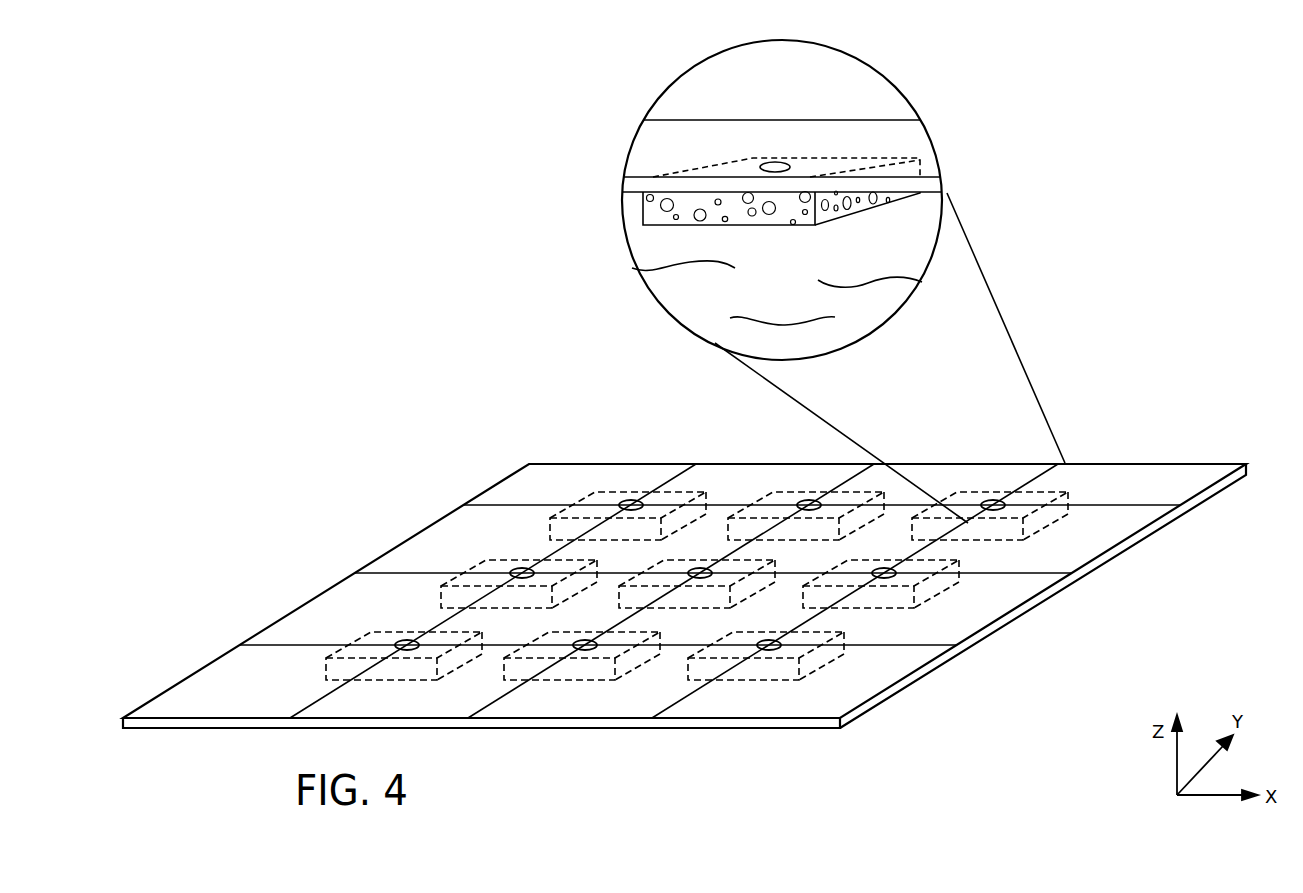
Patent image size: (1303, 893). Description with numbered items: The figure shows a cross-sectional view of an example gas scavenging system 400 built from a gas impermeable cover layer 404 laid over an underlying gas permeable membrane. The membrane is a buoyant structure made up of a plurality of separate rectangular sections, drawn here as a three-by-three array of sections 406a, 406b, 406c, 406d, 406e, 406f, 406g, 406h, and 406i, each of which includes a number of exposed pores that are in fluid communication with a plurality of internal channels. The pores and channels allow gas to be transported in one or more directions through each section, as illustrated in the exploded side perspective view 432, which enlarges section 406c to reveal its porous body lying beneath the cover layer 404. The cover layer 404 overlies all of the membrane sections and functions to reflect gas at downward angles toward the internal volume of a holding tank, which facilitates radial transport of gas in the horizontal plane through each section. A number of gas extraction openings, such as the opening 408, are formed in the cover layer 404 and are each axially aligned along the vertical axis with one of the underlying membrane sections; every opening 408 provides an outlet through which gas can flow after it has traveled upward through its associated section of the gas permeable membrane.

The gas scavenging system 400 is at (1136, 238).
The gas impermeable cover layer 404 is at (1112, 463).
The section of gas permeable membrane 406a is at (661, 541).
The section of gas permeable membrane 406b is at (839, 541).
The section of gas permeable membrane 406c is at (1023, 541).
The section of gas permeable membrane 406d is at (552, 609).
The section of gas permeable membrane 406e is at (730, 609).
The section of gas permeable membrane 406f is at (914, 609).
The section of gas permeable membrane 406g is at (437, 681).
The section of gas permeable membrane 406h is at (615, 681).
The section of gas permeable membrane 406i is at (799, 681).
The gas extraction opening 408 is at (781, 645).
The exploded side perspective view 432 is at (905, 95).